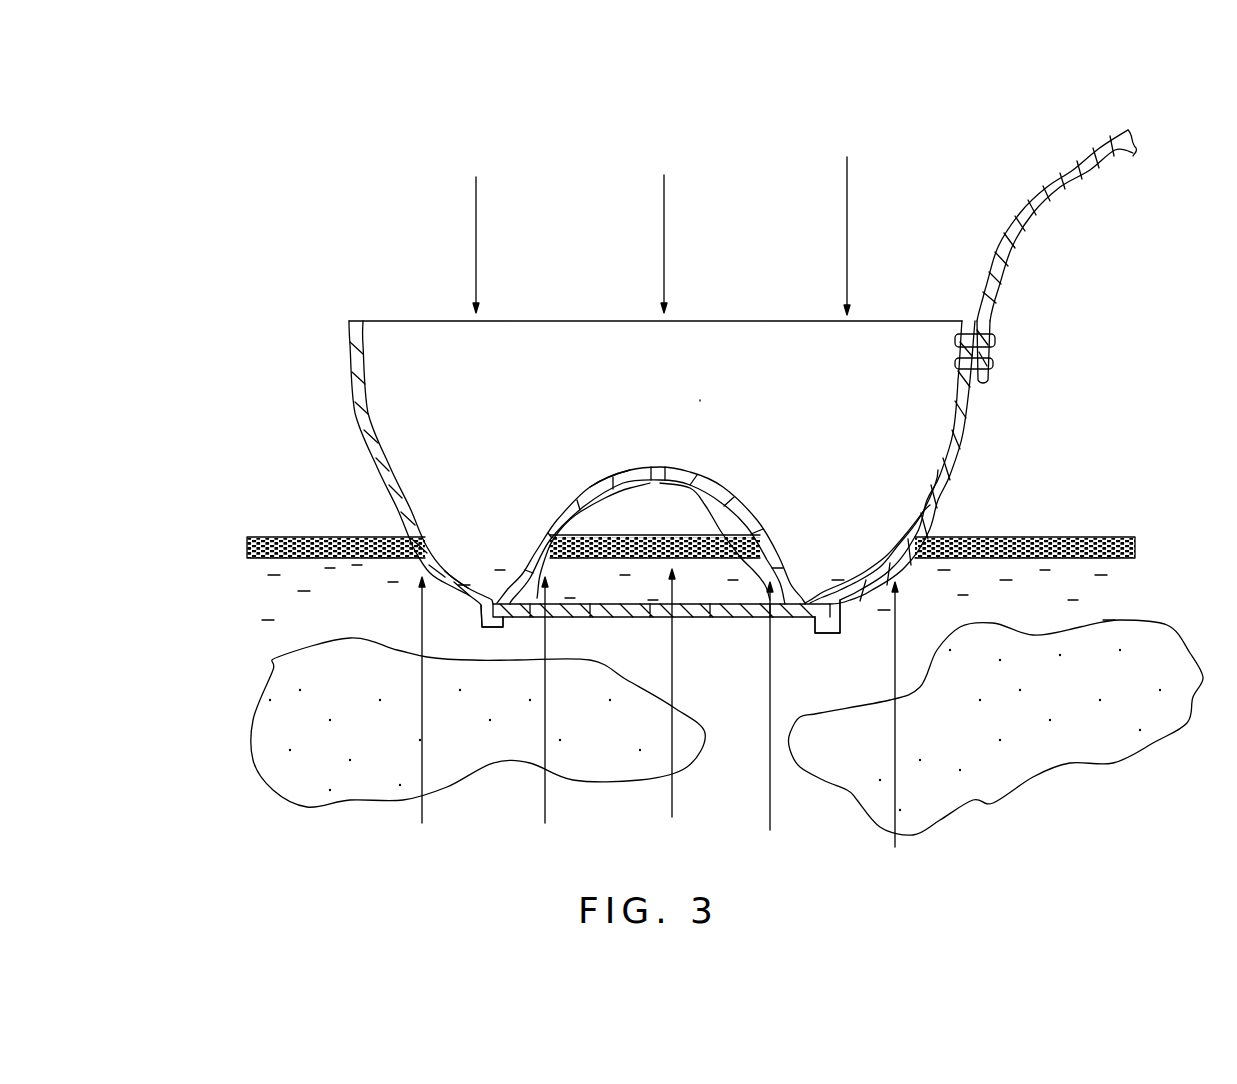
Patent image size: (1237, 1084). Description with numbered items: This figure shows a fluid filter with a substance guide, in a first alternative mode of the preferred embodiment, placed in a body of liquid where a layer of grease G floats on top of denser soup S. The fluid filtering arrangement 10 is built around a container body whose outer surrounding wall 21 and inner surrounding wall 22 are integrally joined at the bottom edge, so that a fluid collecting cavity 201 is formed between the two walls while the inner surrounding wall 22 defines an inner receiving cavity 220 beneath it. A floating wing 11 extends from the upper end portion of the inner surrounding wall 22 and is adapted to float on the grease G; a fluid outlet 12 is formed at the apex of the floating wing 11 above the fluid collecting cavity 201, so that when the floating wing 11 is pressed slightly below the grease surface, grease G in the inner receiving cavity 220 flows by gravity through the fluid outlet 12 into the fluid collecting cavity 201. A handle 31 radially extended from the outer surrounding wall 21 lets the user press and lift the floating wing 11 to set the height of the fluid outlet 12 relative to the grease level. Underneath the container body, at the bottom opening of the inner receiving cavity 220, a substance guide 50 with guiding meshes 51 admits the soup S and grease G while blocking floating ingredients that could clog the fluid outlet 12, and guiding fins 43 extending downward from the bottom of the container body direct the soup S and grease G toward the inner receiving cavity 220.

The fluid filtering arrangement 10 is at (560, 238).
The floating wing 11 is at (632, 474).
The fluid outlet 12 is at (662, 448).
The outer surrounding wall 21 is at (357, 415).
The inner surrounding wall 22 is at (580, 494).
The inner receiving cavity 220 is at (594, 570).
The fluid collecting cavity 201 is at (812, 450).
The guiding fins 43 is at (719, 516).
The handle 31 is at (1008, 247).
The substance guide 50 is at (797, 618).
The guiding meshes 51 is at (720, 624).
The grease G is at (665, 545).
The soup S is at (992, 575).